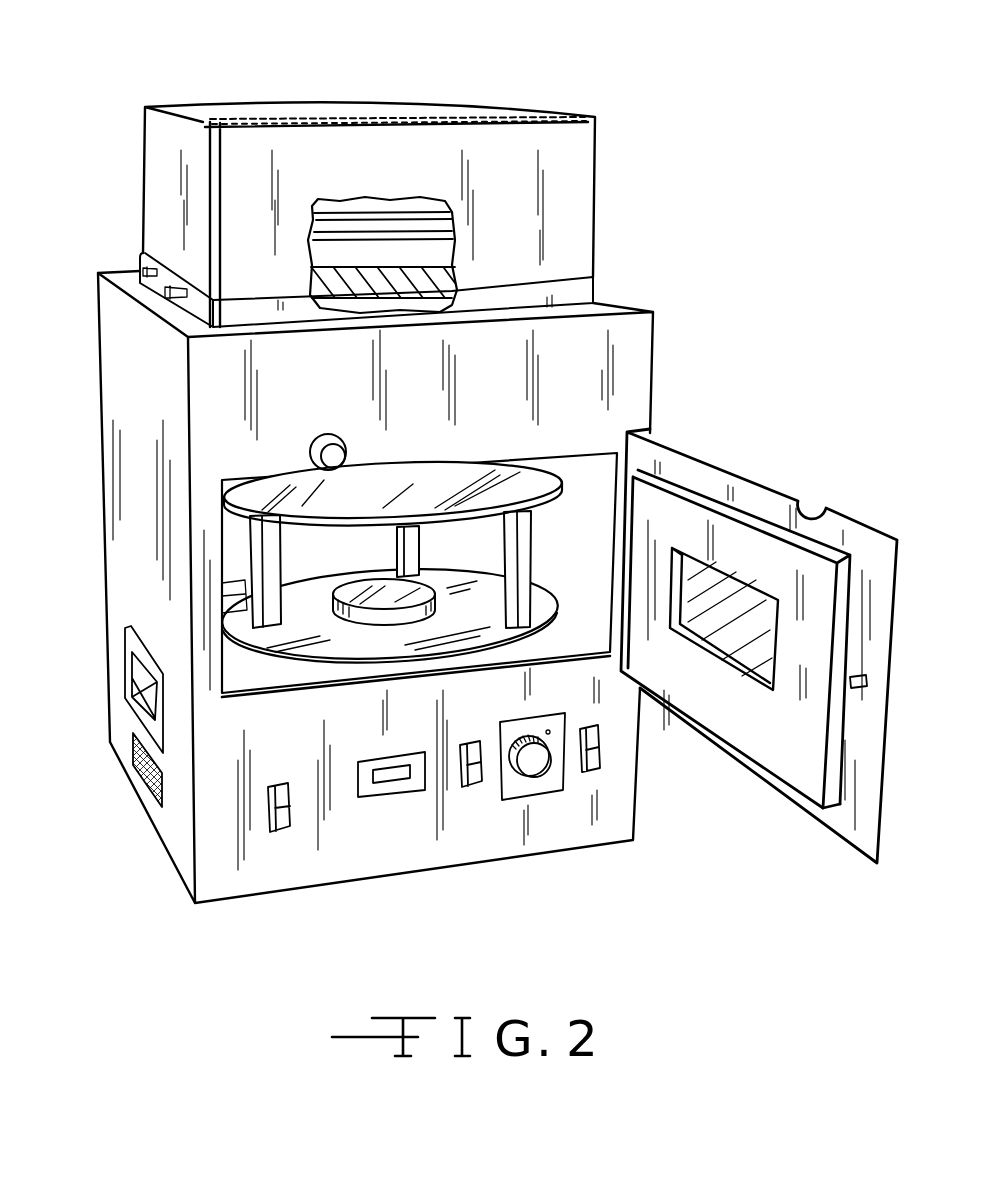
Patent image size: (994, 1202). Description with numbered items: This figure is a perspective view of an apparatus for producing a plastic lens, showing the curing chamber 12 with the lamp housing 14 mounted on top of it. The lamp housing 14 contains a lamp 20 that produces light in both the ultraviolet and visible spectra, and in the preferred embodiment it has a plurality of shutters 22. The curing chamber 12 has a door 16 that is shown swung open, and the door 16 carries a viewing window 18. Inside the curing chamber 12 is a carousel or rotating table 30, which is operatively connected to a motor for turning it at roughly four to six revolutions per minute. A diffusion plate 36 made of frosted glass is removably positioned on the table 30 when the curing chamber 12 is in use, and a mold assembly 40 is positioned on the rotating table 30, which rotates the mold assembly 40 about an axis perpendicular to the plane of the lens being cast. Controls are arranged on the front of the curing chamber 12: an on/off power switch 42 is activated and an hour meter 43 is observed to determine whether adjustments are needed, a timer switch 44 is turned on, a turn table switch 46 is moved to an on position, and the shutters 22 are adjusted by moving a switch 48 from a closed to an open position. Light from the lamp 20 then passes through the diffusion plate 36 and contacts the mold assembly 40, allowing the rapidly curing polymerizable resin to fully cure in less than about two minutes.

The curing chamber 12 is at (572, 580).
The lamp housing 14 is at (595, 182).
The door 16 is at (736, 475).
The viewing window 18 is at (750, 680).
The lamp 20 is at (397, 200).
The shutters 22 is at (358, 117).
The rotating table 30 is at (223, 633).
The diffusion plate 36 is at (223, 500).
The mold assembly 40 is at (343, 620).
The on/off power switch 42 is at (278, 832).
The hour meter 43 is at (388, 797).
The timer switch 44 is at (473, 787).
The turn table switch 46 is at (590, 770).
The switch 48 is at (348, 452).